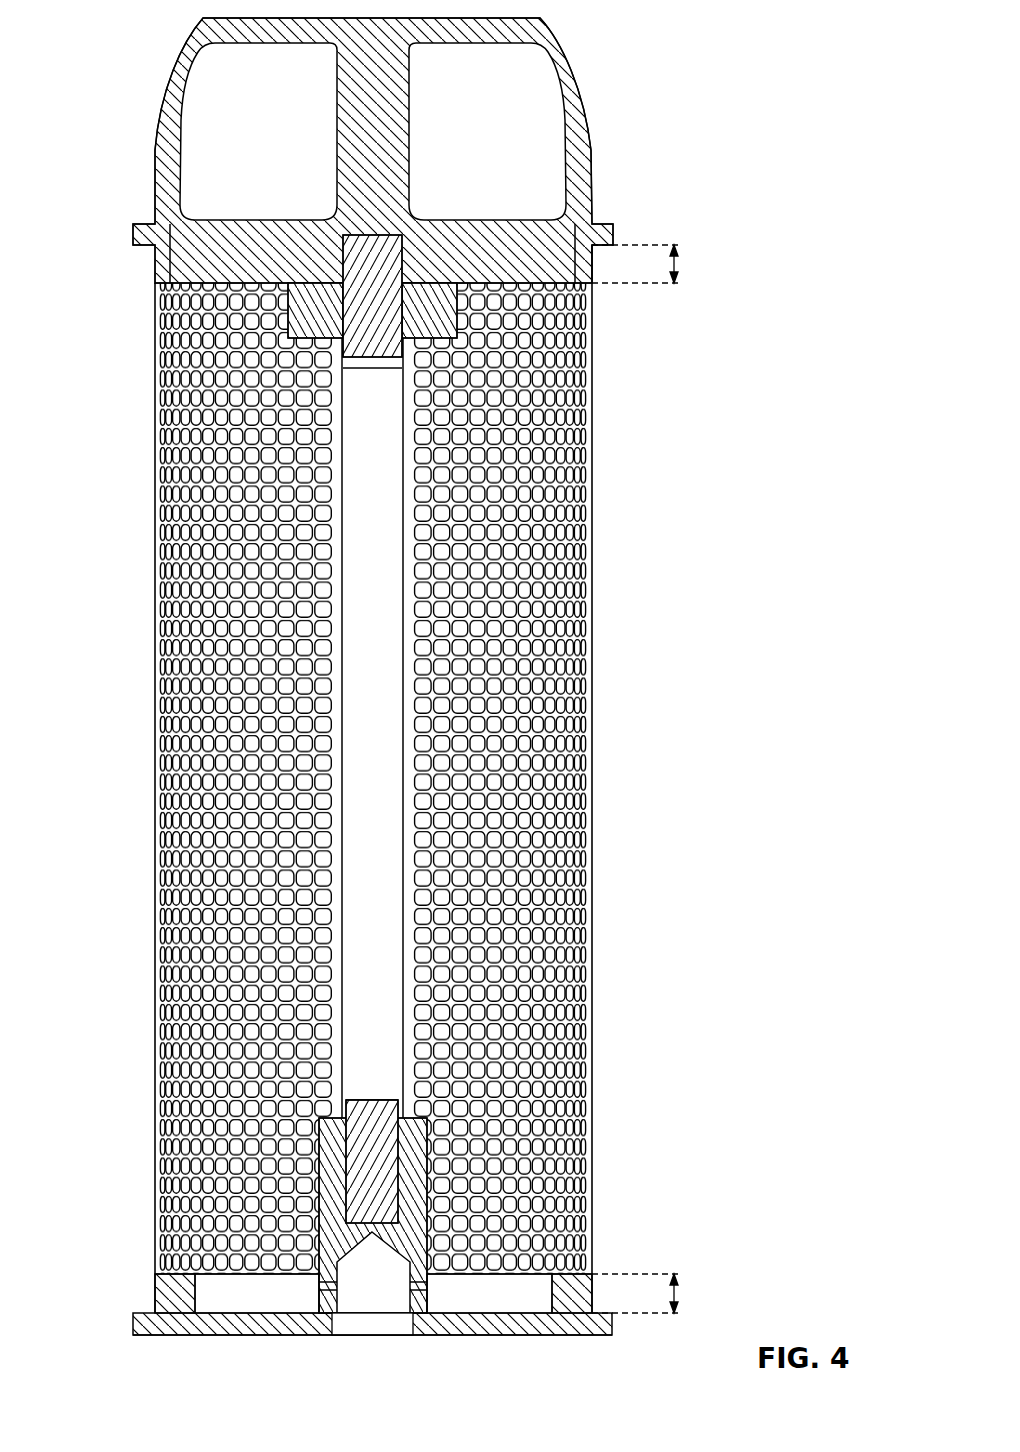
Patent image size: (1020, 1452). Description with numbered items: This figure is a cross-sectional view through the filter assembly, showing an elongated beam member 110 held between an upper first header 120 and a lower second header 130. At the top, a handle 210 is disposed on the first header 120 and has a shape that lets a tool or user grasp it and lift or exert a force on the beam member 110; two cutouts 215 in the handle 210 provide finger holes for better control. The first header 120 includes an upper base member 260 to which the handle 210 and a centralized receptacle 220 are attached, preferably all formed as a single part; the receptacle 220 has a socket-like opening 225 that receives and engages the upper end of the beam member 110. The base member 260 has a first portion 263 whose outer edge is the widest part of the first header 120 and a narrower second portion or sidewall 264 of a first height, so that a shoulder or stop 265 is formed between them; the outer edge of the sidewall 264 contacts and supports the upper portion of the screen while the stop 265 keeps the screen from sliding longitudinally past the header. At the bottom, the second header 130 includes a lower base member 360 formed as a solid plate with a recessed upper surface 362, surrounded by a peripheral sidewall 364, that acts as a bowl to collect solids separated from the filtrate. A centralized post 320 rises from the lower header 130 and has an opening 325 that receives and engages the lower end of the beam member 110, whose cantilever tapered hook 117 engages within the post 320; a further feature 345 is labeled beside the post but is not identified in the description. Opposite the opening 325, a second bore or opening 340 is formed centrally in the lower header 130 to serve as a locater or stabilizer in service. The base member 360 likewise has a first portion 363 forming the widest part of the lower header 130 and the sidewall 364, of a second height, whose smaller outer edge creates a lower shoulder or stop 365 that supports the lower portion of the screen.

The beam member 110 is at (332, 721).
The tapered hook 117 is at (352, 352).
The first header 120 is at (158, 84).
The second header 130 is at (128, 1325).
The handle 210 is at (543, 38).
The cutouts 215 is at (283, 143).
The centralized receptacle 220 is at (298, 323).
The opening 225 is at (390, 322).
The upper base member 260 is at (598, 225).
The first portion 263 is at (133, 232).
The second portion or sidewall 264 is at (593, 267).
The shoulder or stop 265 is at (597, 248).
The centralized stem or post 320 is at (330, 1188).
The opening 325 is at (400, 1145).
The second bore or opening 340 is at (364, 1290).
The sealing ring 345 is at (430, 1289).
The lower base member 360 is at (485, 1322).
The recessed upper surface 362 is at (223, 1287).
The first portion 363 is at (613, 1323).
The second portion or sidewall 364 is at (168, 1297).
The lower shoulder or stop 365 is at (593, 1313).